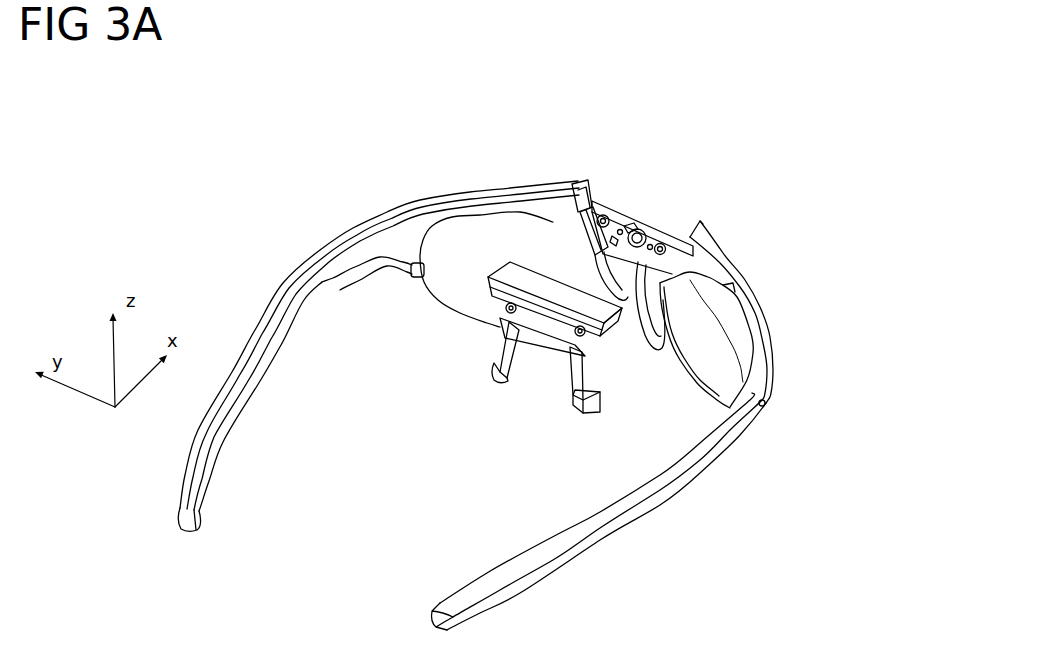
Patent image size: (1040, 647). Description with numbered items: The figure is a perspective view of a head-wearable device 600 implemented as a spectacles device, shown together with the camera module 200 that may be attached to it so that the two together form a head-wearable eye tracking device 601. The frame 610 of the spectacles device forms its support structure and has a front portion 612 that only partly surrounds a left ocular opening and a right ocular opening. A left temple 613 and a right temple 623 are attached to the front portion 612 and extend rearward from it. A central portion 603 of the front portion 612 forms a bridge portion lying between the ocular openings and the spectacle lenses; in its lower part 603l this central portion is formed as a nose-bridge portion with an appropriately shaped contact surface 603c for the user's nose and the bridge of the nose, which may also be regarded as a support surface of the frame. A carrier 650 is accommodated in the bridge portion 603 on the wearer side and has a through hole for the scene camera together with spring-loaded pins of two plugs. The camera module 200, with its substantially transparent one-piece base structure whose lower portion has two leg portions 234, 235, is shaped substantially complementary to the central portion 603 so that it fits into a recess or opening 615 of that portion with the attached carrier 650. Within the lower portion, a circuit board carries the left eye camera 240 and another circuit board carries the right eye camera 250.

The head-wearable device 600 is at (437, 134).
The head-wearable eye tracking device 601 is at (531, 62).
The front portion 612 is at (550, 160).
The recess or opening 615 is at (607, 184).
The central portion 603 is at (688, 176).
The carrier 650 is at (643, 213).
The frame 610 is at (727, 244).
The left temple 613 is at (321, 225).
The camera module 200 is at (480, 309).
The left eye camera 240 is at (476, 369).
The leg portion 234 is at (494, 393).
The leg portion 235 is at (554, 386).
The right eye camera 250 is at (588, 417).
The lower part 603l is at (634, 320).
The contact surface 603c is at (694, 398).
The right temple 623 is at (674, 522).